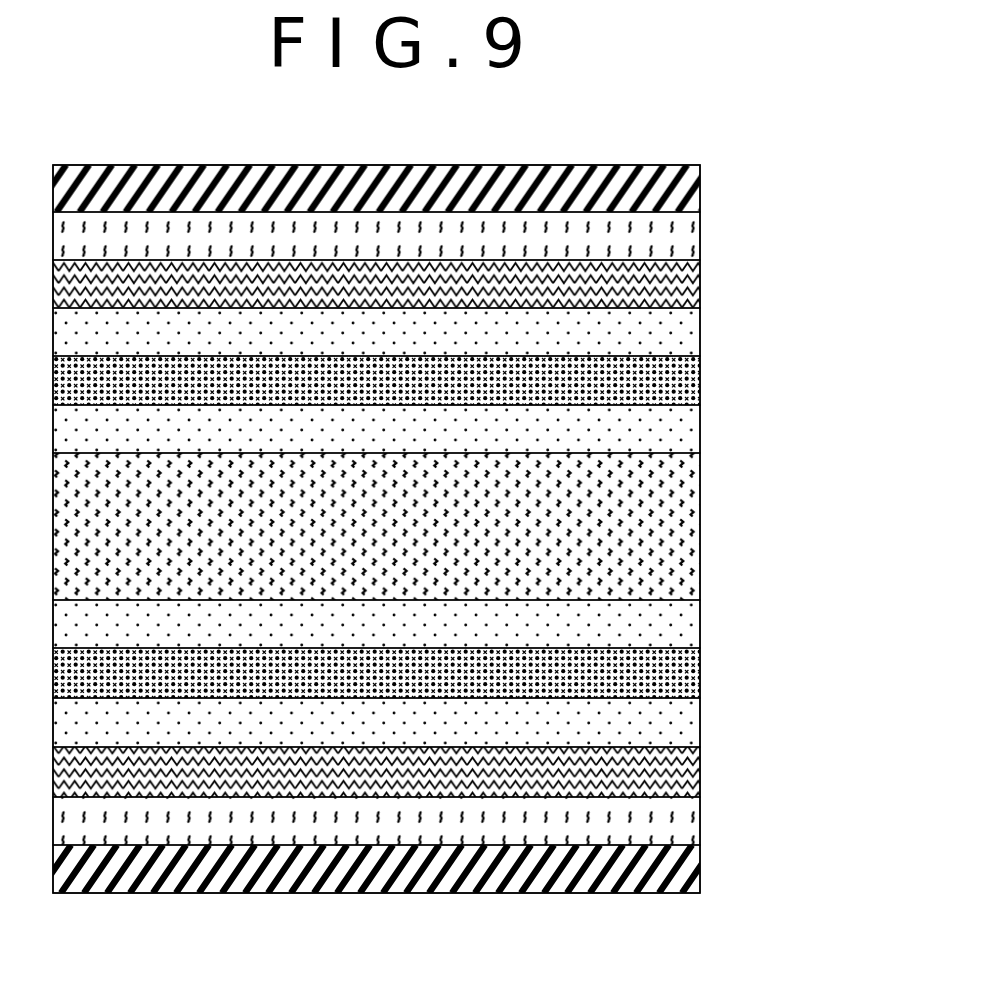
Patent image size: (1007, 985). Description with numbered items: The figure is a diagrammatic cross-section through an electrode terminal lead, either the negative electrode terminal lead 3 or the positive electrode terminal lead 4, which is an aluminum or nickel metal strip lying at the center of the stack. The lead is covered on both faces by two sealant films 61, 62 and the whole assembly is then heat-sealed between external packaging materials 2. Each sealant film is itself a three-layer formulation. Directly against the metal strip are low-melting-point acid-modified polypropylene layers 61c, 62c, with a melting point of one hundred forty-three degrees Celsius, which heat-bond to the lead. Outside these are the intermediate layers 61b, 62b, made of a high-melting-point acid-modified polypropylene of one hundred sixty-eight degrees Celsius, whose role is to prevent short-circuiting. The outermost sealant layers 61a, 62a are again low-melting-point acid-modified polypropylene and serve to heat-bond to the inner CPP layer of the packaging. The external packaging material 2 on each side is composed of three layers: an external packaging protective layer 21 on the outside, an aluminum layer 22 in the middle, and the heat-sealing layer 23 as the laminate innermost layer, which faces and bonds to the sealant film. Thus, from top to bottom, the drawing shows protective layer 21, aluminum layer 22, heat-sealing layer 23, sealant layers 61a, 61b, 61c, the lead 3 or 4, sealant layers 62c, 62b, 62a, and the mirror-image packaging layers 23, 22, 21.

The external packaging material 2 is at (467, 529).
The external packaging protective layer 21 is at (700, 183).
The aluminum layer 22 is at (700, 233).
The heat-sealing layer 23 is at (438, 528).
The sealant film 61 is at (484, 380).
The low-melting-point acid-modified polypropylene layer 61a is at (700, 332).
The intermediate layer 61b is at (700, 380).
The low-melting-point acid-modified polypropylene layer 61c is at (700, 430).
The negative electrode terminal lead 3 is at (466, 526).
The positive electrode terminal lead 4 is at (700, 520).
The sealant film 62 is at (485, 673).
The low-melting-point acid-modified polypropylene layer 62a is at (700, 718).
The intermediate layer 62b is at (700, 675).
The low-melting-point acid-modified polypropylene layer 62c is at (700, 622).